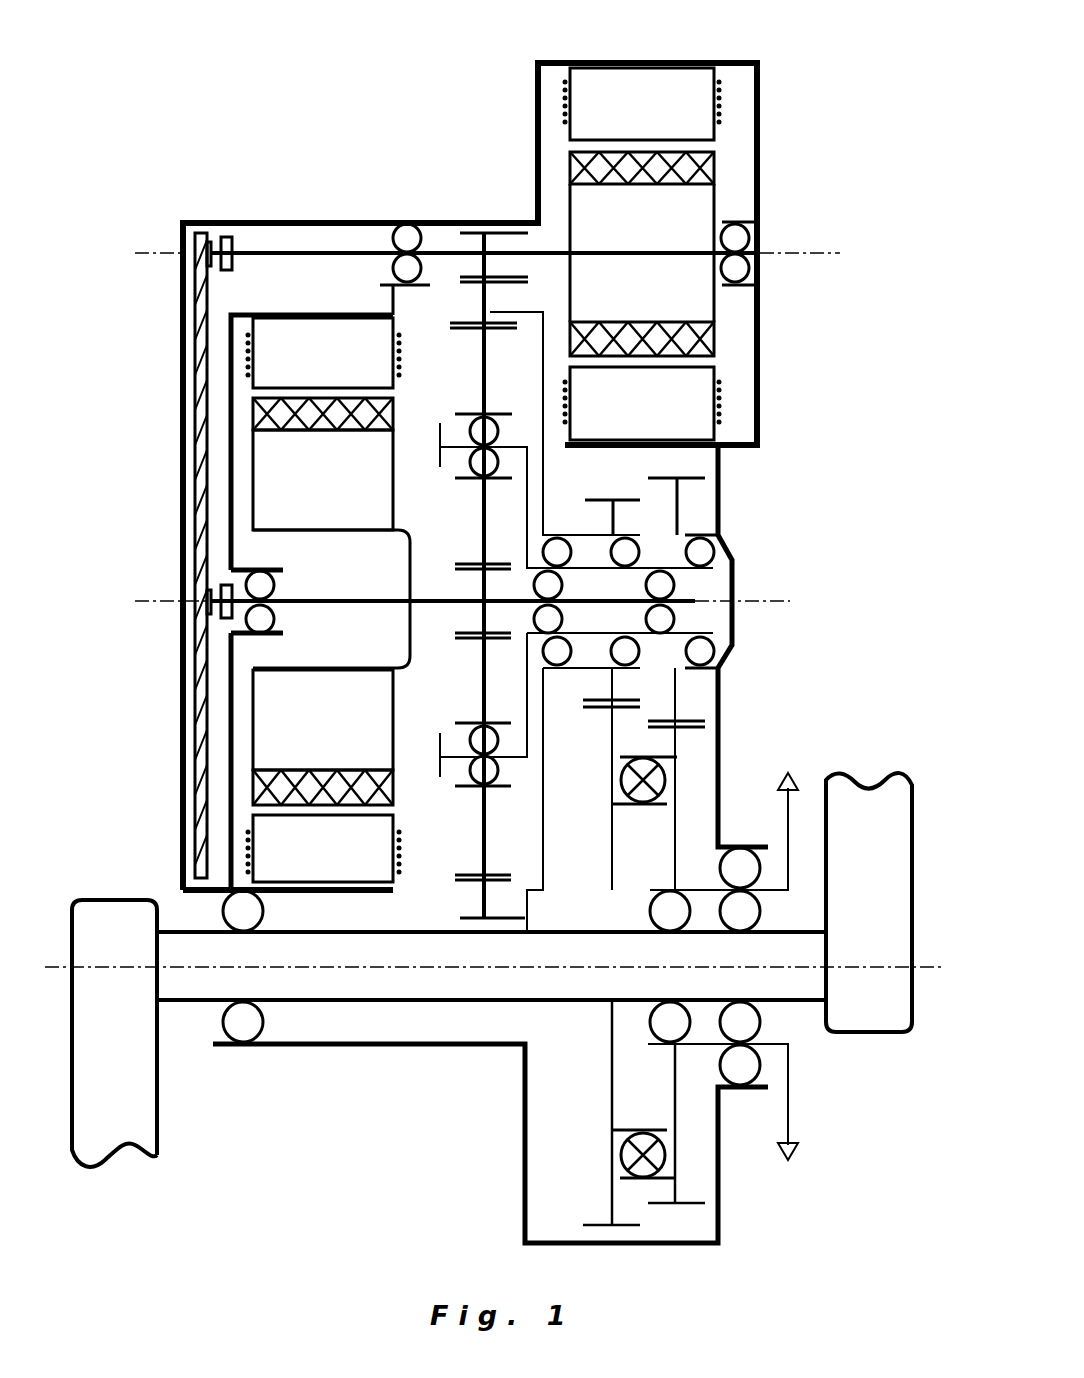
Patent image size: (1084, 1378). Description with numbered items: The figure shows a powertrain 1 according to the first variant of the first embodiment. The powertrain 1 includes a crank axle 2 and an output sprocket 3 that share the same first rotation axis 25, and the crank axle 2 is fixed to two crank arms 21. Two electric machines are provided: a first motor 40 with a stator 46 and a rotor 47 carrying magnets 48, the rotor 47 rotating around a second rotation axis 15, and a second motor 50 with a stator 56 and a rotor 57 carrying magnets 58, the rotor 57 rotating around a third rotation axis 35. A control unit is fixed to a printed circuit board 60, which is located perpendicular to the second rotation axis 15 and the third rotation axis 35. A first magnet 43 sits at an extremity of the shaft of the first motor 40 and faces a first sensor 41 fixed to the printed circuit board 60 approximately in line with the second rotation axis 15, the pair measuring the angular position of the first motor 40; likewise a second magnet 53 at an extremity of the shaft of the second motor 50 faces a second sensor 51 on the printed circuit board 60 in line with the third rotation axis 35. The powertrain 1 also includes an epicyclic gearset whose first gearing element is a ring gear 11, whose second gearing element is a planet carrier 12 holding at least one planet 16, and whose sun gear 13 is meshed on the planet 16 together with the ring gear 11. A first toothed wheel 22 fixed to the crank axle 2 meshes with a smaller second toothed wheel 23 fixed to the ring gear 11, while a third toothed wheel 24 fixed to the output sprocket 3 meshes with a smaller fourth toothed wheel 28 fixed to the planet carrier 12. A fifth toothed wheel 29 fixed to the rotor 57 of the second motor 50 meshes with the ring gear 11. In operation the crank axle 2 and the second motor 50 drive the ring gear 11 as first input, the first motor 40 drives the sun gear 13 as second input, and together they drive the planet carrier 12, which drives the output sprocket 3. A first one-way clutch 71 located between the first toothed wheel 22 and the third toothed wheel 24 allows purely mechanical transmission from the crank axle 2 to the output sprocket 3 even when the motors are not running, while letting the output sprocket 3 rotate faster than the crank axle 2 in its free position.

The powertrain 1 is at (822, 118).
The crank axle 2 is at (340, 983).
The output sprocket 3 is at (790, 812).
The ring gear 11 is at (482, 298).
The planet carrier 12 is at (530, 480).
The sun gear 13 is at (482, 612).
The second rotation axis 15 is at (787, 600).
The planet 16 is at (490, 365).
The crank arms 21 is at (110, 1115).
The first toothed wheel 22 is at (610, 1102).
The second toothed wheel 23 is at (612, 697).
The third toothed wheel 24 is at (677, 1155).
The first rotation axis 25 is at (919, 962).
The fourth toothed wheel 28 is at (680, 498).
The fifth toothed wheel 29 is at (492, 240).
The third rotation axis 35 is at (812, 250).
The first motor 40 is at (242, 602).
The first sensor 41 is at (210, 610).
The first magnet 43 is at (217, 592).
The stator 46 is at (290, 830).
The rotor 47 is at (290, 727).
The magnets 48 is at (290, 790).
The second motor 50 is at (655, 92).
The second sensor 51 is at (207, 250).
The second magnet 53 is at (228, 237).
The stator 56 is at (698, 407).
The rotor 57 is at (698, 303).
The magnets 58 is at (698, 340).
The printed circuit board 60 is at (200, 424).
The first one-way clutch 71 is at (665, 778).